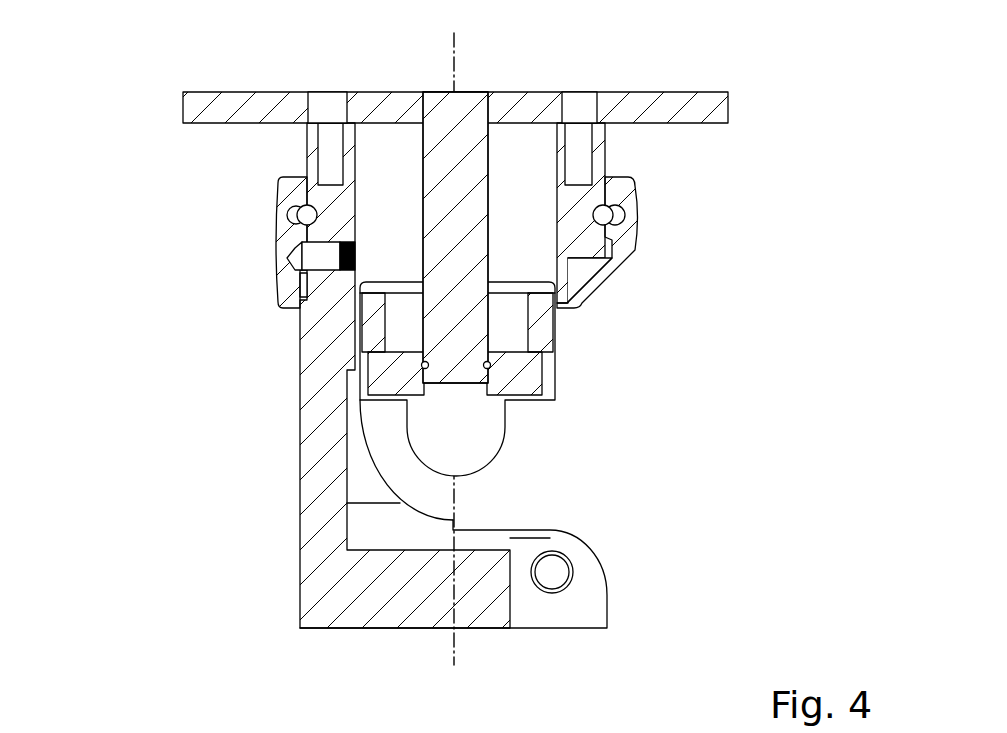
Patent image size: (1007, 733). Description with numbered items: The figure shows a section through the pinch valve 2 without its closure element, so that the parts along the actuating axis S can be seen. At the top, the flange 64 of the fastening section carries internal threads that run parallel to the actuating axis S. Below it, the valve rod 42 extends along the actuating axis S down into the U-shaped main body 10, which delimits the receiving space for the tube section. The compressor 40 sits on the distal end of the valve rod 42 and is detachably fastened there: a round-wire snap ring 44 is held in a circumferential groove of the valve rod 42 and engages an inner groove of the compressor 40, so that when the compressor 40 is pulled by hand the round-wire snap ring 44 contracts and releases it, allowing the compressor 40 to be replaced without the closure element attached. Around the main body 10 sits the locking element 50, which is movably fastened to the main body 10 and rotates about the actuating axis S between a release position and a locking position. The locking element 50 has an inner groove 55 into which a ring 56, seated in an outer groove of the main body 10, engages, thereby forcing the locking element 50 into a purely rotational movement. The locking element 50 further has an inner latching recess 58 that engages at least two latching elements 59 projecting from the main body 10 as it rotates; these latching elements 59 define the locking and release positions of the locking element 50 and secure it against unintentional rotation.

The pinch valve 2 is at (97, 186).
The main body 10 is at (300, 614).
The compressor 40 is at (417, 437).
The valve rod 42 is at (432, 330).
The round-wire snap ring 44 is at (487, 365).
The locking element 50 is at (623, 192).
The inner groove 55 is at (283, 210).
The ring 56 is at (622, 217).
The inner latching recess 58 is at (287, 257).
The latching elements 59 is at (297, 250).
The flange 64 is at (700, 100).
The actuating axis S is at (447, 50).